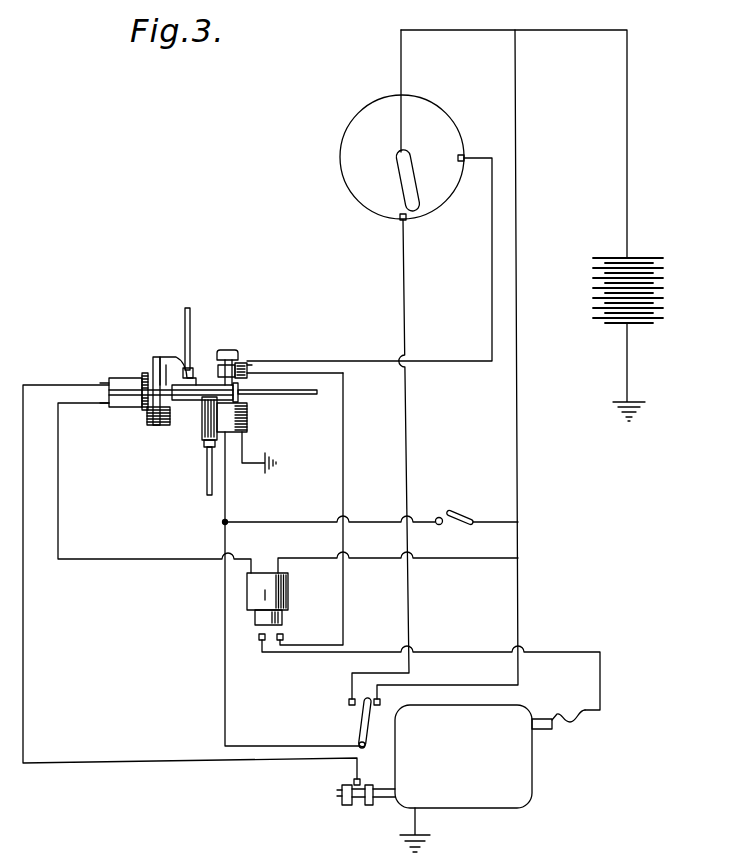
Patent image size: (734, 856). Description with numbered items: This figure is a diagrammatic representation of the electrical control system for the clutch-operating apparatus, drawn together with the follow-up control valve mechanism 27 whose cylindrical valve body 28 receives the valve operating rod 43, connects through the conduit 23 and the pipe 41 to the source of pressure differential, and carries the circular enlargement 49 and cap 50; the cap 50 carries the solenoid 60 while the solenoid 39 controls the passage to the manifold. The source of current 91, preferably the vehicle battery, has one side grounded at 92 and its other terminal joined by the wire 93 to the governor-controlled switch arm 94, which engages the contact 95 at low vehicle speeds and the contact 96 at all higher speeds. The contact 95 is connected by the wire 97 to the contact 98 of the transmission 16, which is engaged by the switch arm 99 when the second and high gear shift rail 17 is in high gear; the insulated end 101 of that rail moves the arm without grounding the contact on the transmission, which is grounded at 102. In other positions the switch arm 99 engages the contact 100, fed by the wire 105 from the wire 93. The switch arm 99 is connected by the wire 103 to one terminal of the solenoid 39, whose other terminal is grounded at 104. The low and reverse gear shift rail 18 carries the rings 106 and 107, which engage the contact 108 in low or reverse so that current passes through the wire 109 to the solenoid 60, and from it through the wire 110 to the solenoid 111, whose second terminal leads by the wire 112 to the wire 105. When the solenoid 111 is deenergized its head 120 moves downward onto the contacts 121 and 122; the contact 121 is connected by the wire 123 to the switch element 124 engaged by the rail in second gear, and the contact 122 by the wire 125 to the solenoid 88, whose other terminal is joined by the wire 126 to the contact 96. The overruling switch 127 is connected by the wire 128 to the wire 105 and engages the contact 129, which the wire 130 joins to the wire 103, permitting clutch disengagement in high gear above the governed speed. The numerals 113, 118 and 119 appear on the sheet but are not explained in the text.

The transmission 16 is at (496, 809).
The second and high gear shift rail 17 is at (540, 730).
The low and reverse gear shift rail 18 is at (382, 799).
The conduit 23 is at (191, 312).
The follow-up control valve mechanism 27 is at (183, 405).
The cylindrical valve body 28 is at (199, 349).
The solenoid 39 is at (248, 421).
The pipe 41 is at (207, 489).
The valve operating rod 43 is at (302, 396).
The circular enlargement 49 is at (165, 429).
The cap 50 is at (147, 421).
The solenoid 60 is at (121, 378).
The solenoid 88 is at (241, 361).
The source of current 91 is at (664, 271).
The ground 92 is at (631, 402).
The wire 93 is at (628, 183).
The switch arm 94 is at (397, 173).
The contact 95 is at (399, 222).
The contact 96 is at (464, 156).
The wire 97 is at (404, 318).
The contact 98 is at (348, 702).
The switch arm 99 is at (357, 719).
The contact 100 is at (381, 703).
The insulated end 101 is at (372, 748).
The ground 102 is at (428, 838).
The wire 103 is at (225, 698).
The ground 104 is at (273, 456).
The wire 105 is at (518, 425).
The ring 106 is at (368, 807).
The ring 107 is at (343, 802).
The contact 108 is at (352, 782).
The wire 109 is at (276, 761).
The wire 110 is at (150, 559).
The solenoid 111 is at (291, 597).
The wire 112 is at (305, 557).
The element 113 is at (238, 847).
The element 118 is at (201, 846).
The element 119 is at (159, 849).
The head 120 is at (255, 620).
The contact 121 is at (258, 637).
The contact 122 is at (284, 637).
The wire 123 is at (601, 672).
The switch element 124 is at (578, 710).
The wire 125 is at (346, 622).
The wire 126 is at (443, 361).
The overruling switch 127 is at (447, 524).
The wire 128 is at (463, 516).
The contact 129 is at (438, 525).
The wire 130 is at (289, 521).